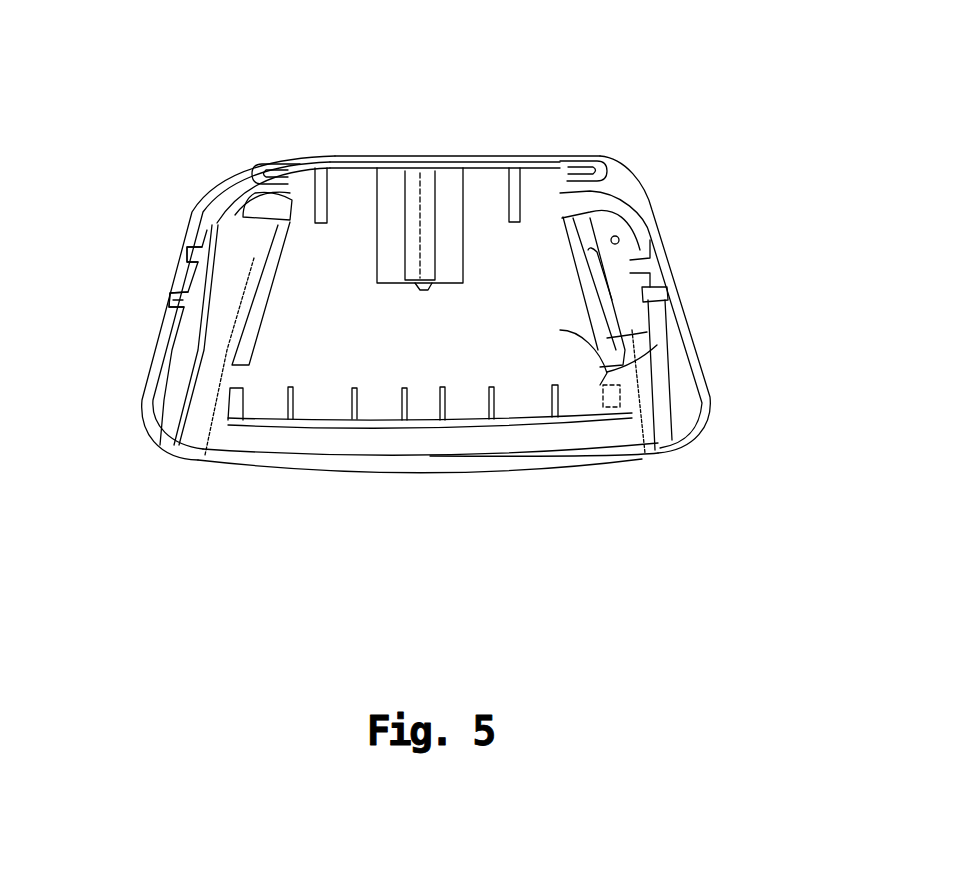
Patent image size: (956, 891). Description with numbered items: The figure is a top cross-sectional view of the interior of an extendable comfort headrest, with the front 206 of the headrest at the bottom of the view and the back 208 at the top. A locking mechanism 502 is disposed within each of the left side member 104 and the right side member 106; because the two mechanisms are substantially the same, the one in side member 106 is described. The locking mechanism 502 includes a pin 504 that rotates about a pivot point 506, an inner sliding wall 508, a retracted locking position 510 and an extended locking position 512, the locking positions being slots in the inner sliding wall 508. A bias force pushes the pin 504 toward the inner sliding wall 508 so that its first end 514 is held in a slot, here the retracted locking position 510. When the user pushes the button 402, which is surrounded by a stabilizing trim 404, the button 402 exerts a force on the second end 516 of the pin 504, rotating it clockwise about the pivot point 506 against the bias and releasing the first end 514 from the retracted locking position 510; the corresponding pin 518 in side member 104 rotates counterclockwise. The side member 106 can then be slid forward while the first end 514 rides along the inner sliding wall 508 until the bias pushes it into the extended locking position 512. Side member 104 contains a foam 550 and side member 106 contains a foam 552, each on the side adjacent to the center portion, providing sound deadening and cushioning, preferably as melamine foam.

The side member 104 is at (162, 449).
The side member 106 is at (677, 454).
The front 206 is at (510, 474).
The back 208 is at (363, 155).
The button 402 is at (182, 268).
The trim 404 is at (173, 301).
The locking mechanism 502 is at (608, 192).
The pin 504 is at (595, 212).
The pivot point 506 is at (620, 240).
The inner sliding wall 508 is at (677, 297).
The retracted locking position 510 is at (545, 202).
The extended locking position 512 is at (607, 373).
The first end 514 is at (555, 203).
The second end 516 is at (640, 258).
The pin 518 is at (237, 212).
The foam 550 is at (197, 410).
The foam 552 is at (657, 430).